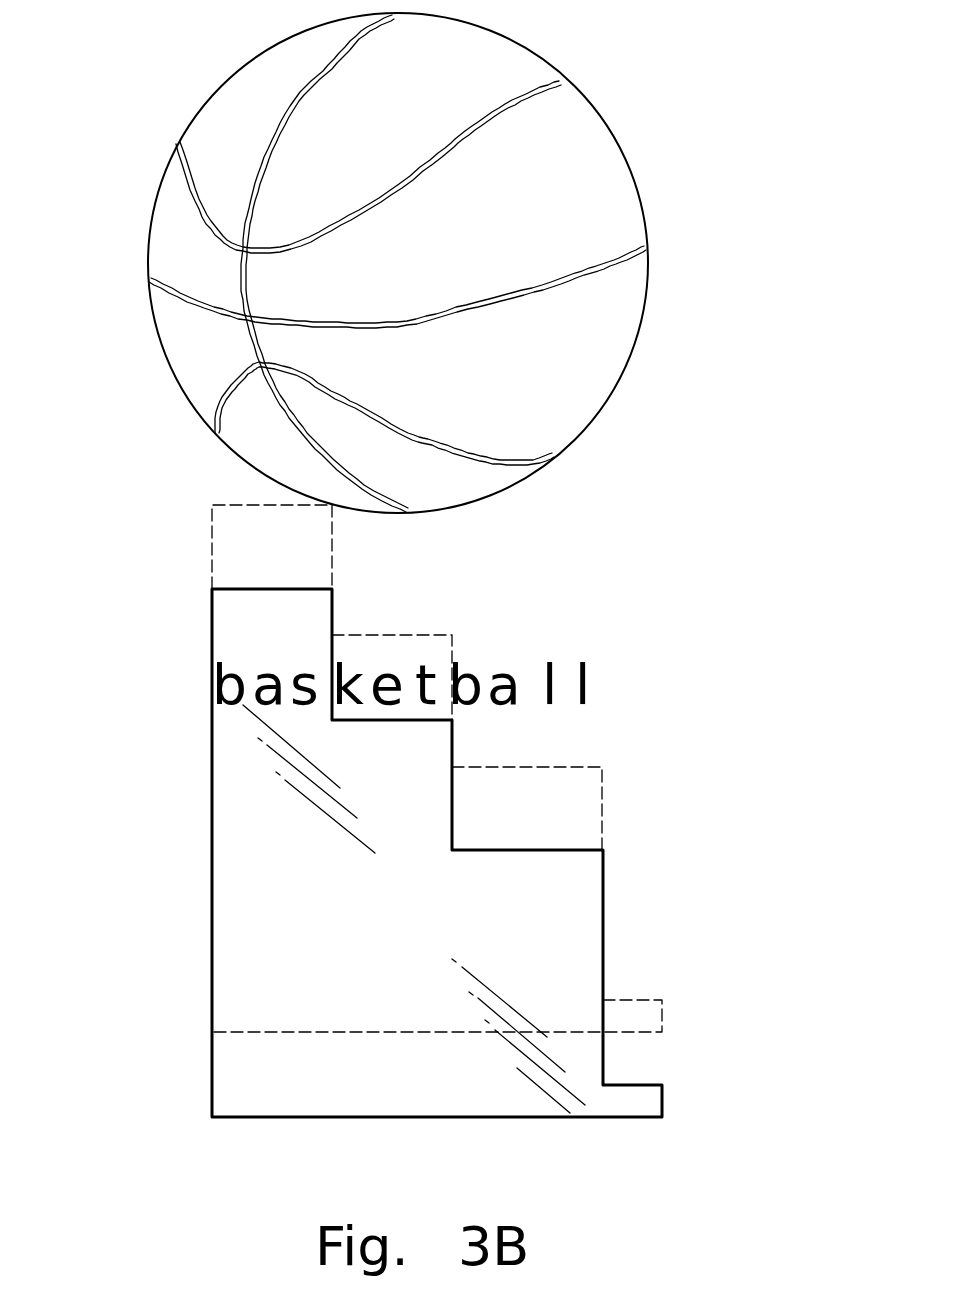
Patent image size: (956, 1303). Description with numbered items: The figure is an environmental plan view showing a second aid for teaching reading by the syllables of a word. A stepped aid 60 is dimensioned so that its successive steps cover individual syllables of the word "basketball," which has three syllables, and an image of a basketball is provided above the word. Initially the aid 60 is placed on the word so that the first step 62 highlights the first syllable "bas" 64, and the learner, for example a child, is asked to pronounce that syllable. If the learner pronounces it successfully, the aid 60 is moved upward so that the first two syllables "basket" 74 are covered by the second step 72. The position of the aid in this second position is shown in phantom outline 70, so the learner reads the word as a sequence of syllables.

The aid 60 is at (262, 1117).
The first step 62 is at (245, 637).
The first syllable 64 is at (243, 703).
The phantom outline 70 is at (663, 1005).
The second step 72 is at (423, 653).
The first two syllables 74 is at (437, 702).